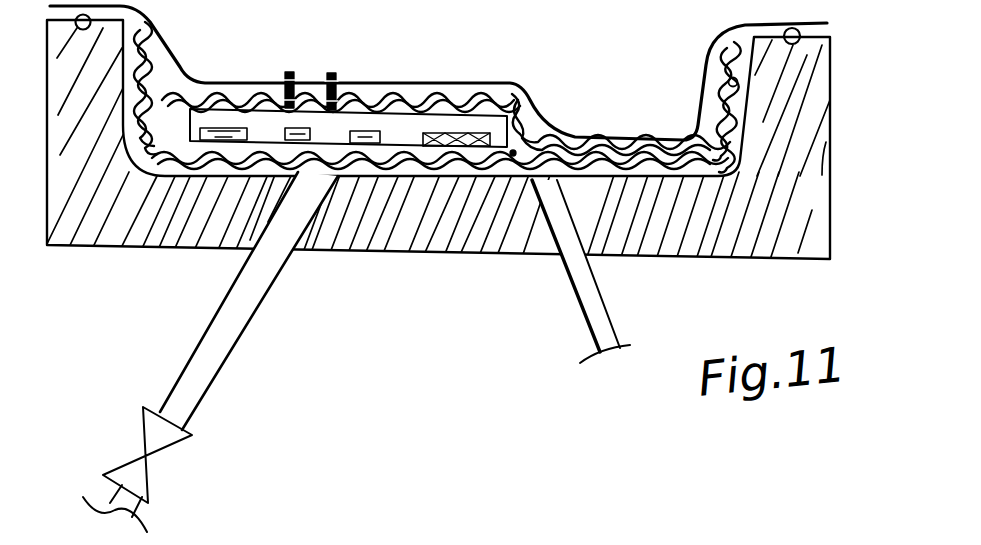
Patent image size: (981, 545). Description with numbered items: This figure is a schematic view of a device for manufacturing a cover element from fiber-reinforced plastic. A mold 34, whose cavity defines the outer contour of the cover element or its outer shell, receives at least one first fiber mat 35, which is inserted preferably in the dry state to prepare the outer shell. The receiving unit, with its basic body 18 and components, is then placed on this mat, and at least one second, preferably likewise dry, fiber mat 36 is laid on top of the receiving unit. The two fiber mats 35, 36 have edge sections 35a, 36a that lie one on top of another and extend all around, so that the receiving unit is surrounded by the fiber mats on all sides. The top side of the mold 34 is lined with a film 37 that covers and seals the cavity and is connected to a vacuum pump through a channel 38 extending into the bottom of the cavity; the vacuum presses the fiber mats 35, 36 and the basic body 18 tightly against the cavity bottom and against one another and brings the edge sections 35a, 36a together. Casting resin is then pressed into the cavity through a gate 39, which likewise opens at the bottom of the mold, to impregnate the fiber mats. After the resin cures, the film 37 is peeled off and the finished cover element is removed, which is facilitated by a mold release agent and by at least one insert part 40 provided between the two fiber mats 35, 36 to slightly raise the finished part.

The basic body 18 is at (402, 128).
The mold 34 is at (445, 268).
The first fiber mat 35 is at (513, 153).
The edge section 35a is at (738, 83).
The second fiber mat 36 is at (448, 100).
The edge section 36a is at (712, 97).
The film 37 is at (178, 58).
The channel 38 is at (592, 293).
The gate 39 is at (212, 343).
The insert part 40 is at (338, 80).